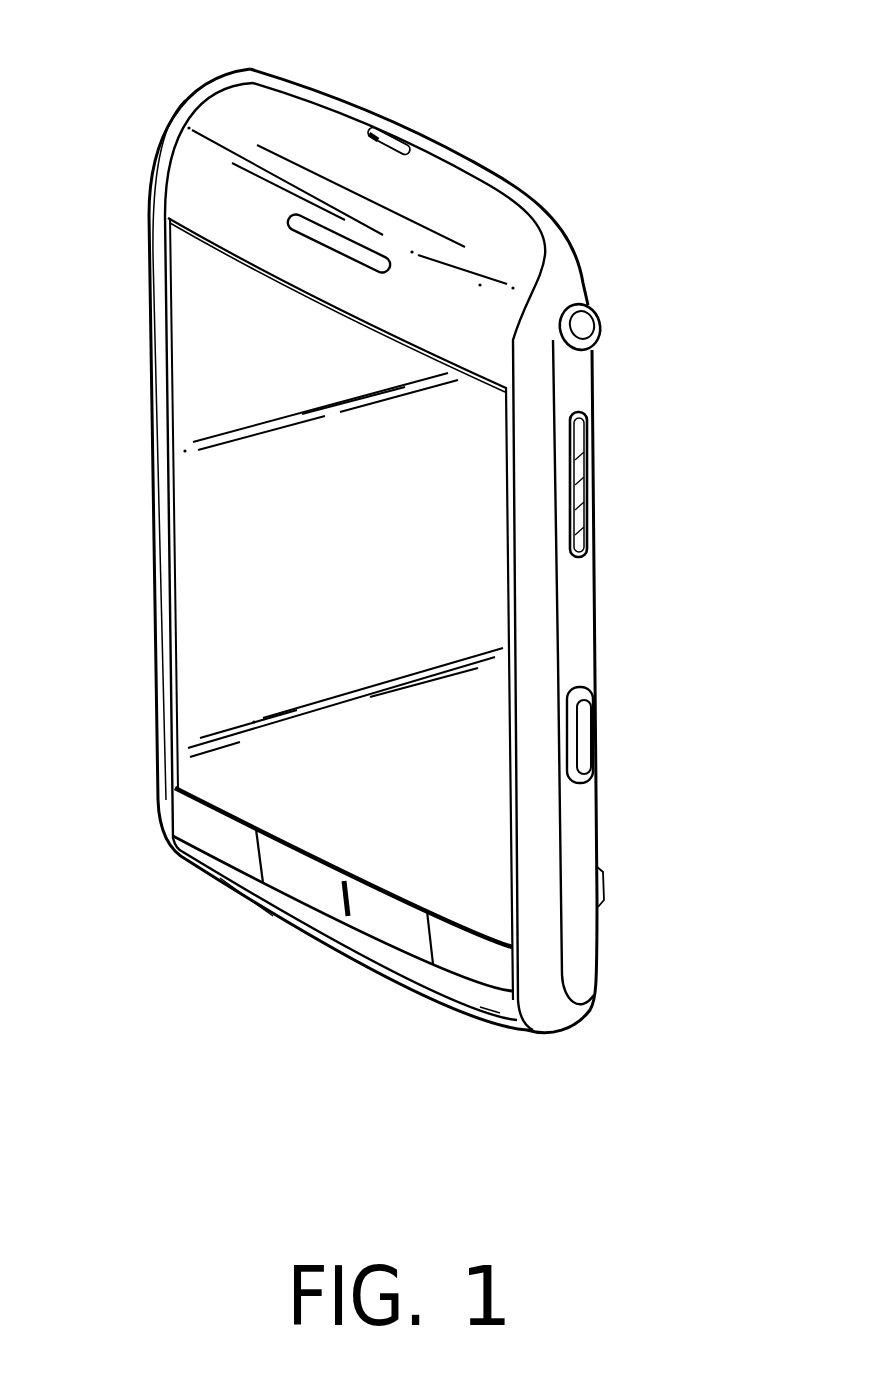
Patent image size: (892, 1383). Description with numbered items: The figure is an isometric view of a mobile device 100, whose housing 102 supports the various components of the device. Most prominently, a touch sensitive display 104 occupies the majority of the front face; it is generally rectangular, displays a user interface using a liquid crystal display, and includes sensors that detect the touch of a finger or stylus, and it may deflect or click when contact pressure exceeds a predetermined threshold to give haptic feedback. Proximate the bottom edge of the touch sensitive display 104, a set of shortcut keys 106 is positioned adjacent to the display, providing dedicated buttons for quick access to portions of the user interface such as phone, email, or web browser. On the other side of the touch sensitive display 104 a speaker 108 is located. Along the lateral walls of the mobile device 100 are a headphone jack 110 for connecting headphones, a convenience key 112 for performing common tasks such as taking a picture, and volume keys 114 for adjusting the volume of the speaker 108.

The mobile device 100 is at (563, 109).
The housing 102 is at (550, 285).
The touch sensitive display 104 is at (240, 565).
The shortcut keys 106 is at (307, 883).
The speaker 108 is at (310, 232).
The headphone jack 110 is at (597, 328).
The convenience key 112 is at (583, 738).
The volume keys 114 is at (587, 440).